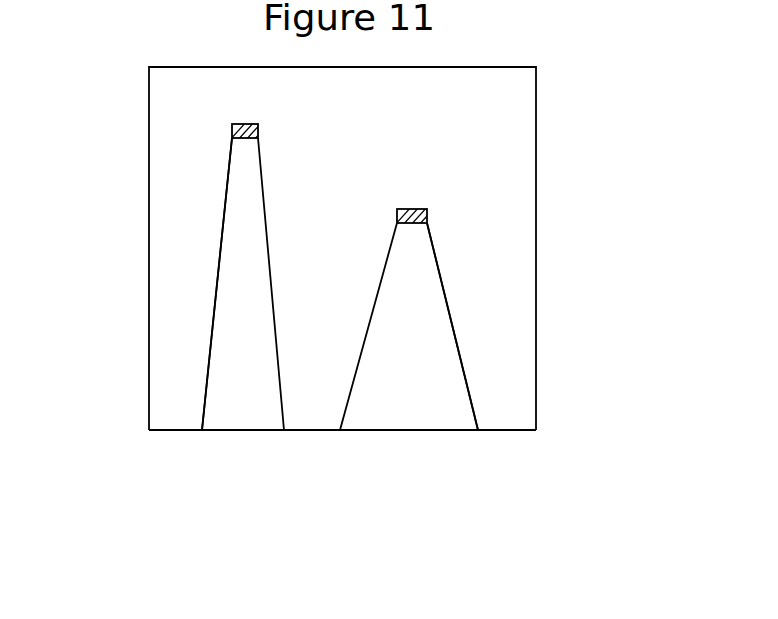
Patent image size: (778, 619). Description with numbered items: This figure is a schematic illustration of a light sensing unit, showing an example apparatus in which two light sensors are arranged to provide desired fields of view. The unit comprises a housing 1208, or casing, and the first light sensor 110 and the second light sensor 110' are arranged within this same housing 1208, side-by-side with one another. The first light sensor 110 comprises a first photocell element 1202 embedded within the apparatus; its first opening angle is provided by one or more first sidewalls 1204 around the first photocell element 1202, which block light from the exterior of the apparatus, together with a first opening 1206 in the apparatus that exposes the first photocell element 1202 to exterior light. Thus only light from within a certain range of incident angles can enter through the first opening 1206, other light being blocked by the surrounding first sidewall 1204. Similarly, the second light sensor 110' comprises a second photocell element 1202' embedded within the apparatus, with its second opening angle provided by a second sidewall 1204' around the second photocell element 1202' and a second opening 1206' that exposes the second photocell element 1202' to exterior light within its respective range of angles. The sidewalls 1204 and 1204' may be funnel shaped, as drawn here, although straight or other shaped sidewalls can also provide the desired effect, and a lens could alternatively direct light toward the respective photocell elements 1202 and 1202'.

The first light sensor 110 is at (494, 292).
The second light sensor 110' is at (164, 238).
The first photocell element 1202 is at (440, 178).
The second photocell element 1202' is at (306, 120).
The first sidewall 1204 is at (526, 326).
The second sidewall 1204' is at (147, 284).
The first opening 1206 is at (409, 480).
The second opening 1206' is at (243, 481).
The housing 1208 is at (536, 95).